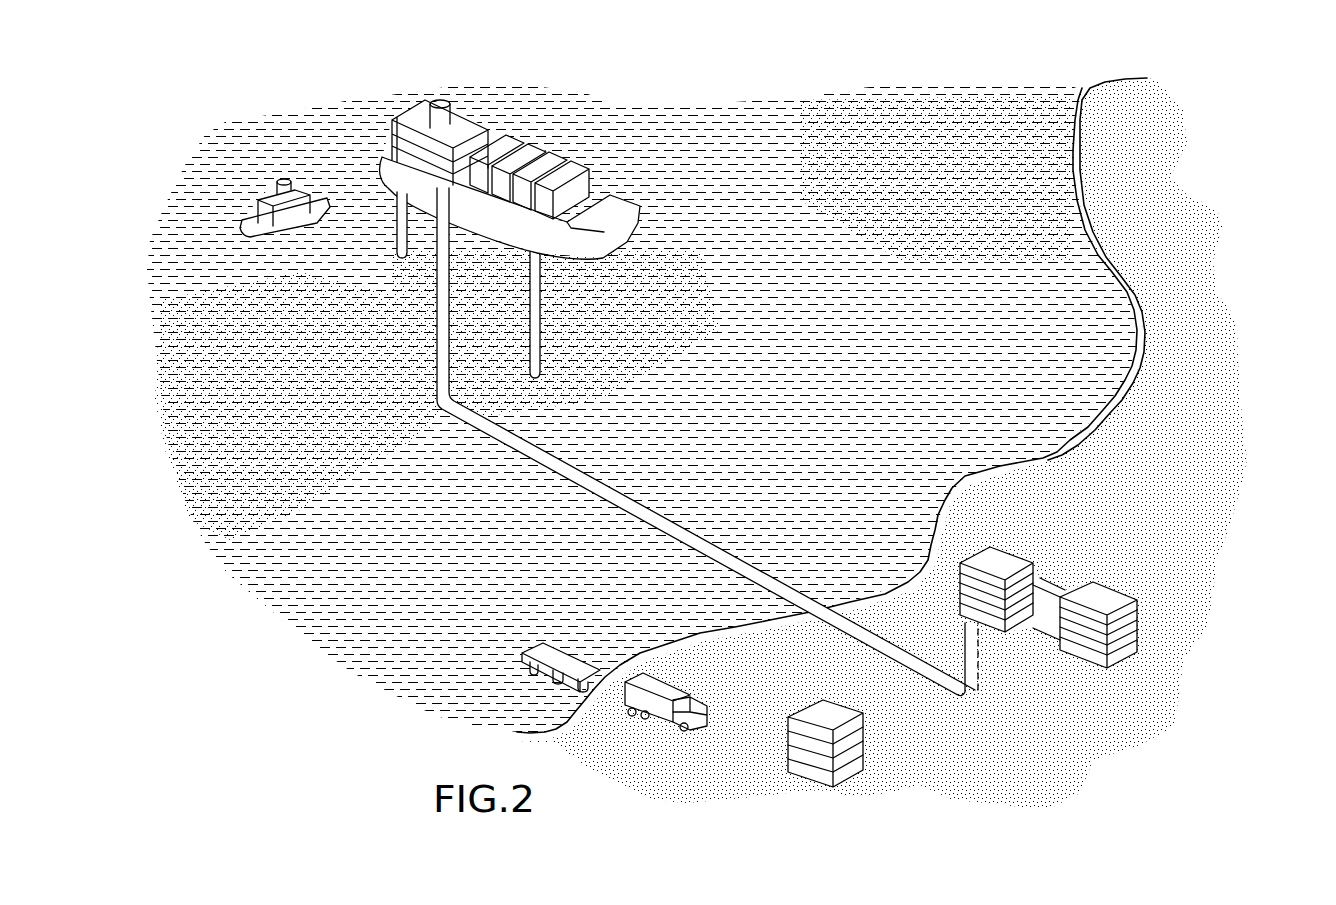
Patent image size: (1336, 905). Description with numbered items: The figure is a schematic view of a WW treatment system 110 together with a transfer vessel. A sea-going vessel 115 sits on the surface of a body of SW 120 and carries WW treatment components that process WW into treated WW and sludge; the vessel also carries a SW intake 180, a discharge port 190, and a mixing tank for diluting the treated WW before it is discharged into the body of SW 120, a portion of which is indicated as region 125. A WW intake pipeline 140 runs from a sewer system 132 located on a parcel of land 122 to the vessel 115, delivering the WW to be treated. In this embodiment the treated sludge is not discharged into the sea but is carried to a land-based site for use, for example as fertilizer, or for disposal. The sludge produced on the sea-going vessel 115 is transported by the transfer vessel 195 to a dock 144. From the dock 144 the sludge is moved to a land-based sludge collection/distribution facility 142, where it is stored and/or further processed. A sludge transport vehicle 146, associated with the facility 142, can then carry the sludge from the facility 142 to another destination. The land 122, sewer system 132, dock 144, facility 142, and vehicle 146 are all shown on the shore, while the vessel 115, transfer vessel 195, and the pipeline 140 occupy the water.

The WW treatment system 110 is at (253, 100).
The sea-going vessel 115 is at (524, 127).
The body of water 120 is at (911, 376).
The parcel of land 122 is at (1150, 553).
The offshore region 125 is at (294, 398).
The sewer system 132 is at (1090, 637).
The pipeline 140 is at (567, 478).
The land-based sludge collection/distribution facility 142 is at (833, 707).
The dock 144 is at (587, 655).
The sludge transport vehicle 146 is at (692, 696).
The riser pipe 180 is at (540, 336).
The discharge port 190 is at (403, 262).
The transfer vessel 195 is at (247, 190).